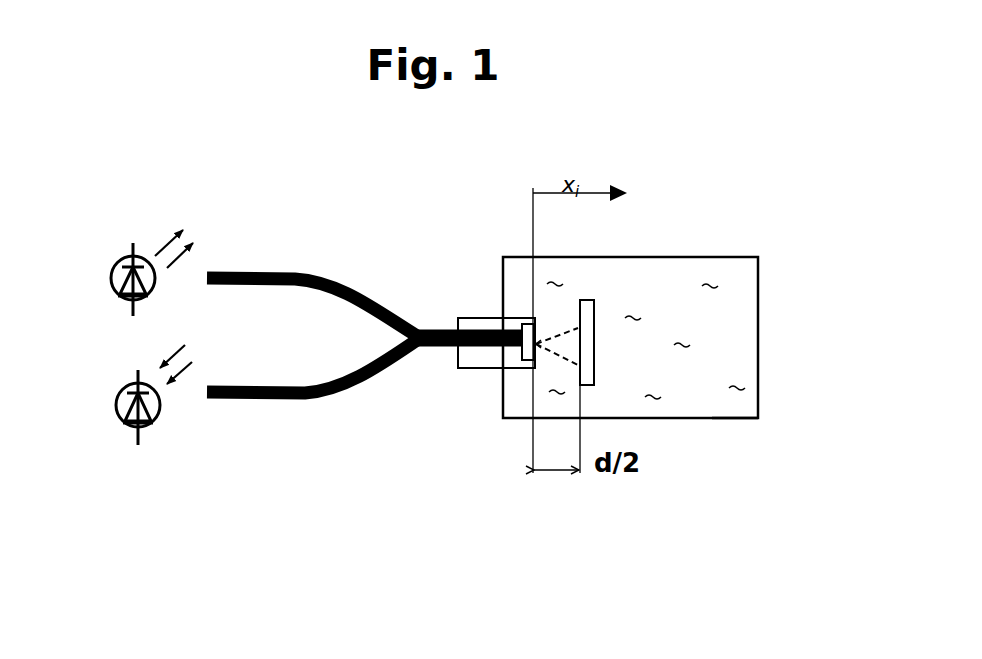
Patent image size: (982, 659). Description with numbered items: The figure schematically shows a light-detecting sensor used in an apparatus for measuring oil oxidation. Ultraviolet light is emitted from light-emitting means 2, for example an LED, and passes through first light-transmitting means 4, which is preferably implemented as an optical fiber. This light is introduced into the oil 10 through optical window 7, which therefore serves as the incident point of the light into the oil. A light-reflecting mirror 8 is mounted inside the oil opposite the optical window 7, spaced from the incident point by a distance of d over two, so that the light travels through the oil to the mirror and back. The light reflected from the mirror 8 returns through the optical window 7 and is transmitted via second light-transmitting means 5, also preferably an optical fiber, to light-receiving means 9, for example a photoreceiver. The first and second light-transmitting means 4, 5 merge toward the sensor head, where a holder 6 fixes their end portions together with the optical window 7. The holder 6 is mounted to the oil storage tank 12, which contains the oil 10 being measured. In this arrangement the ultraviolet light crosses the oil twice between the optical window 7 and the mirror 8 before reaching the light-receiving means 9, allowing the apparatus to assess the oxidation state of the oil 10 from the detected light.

The light-emitting means 2 is at (113, 292).
The first light-transmitting means 4 is at (268, 275).
The second light-transmitting means 5 is at (285, 400).
The holder 6 is at (473, 357).
The optical window 7 is at (520, 326).
The light-reflecting mirror 8 is at (592, 312).
The light-receiving means 9 is at (122, 422).
The oil 10 is at (747, 315).
The oil storage tank 12 is at (712, 418).